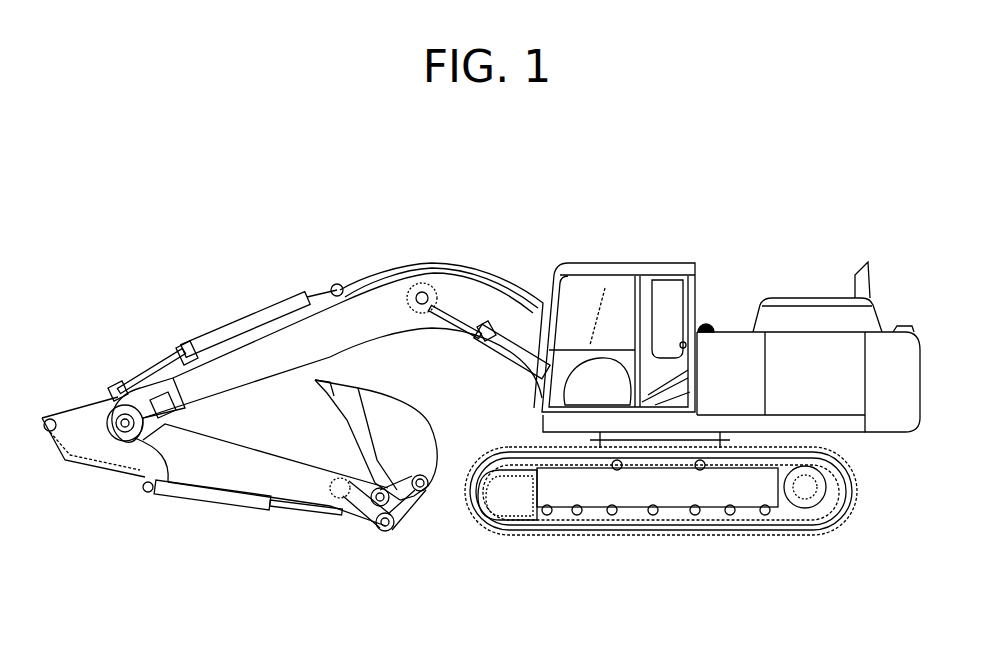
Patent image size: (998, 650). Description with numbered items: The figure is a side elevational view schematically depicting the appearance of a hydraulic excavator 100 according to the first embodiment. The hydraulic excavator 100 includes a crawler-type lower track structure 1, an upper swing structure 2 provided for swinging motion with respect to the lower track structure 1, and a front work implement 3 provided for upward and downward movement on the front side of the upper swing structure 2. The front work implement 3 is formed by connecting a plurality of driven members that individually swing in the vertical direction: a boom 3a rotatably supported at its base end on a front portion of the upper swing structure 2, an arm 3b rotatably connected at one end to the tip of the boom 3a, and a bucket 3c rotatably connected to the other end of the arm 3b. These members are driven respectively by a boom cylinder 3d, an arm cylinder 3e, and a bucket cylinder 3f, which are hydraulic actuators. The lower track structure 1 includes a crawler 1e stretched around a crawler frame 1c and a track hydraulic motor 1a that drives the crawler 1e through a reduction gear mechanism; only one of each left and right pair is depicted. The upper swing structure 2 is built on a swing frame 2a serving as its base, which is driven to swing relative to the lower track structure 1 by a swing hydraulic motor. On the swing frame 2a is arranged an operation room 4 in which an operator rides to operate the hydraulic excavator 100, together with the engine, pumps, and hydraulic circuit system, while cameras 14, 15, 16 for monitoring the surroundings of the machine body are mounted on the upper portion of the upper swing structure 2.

The hydraulic excavator 100 is at (145, 192).
The lower track structure 1 is at (672, 545).
The track hydraulic motor 1a is at (808, 495).
The crawler frame 1c is at (595, 492).
The crawler 1e is at (850, 490).
The upper swing structure 2 is at (810, 262).
The swing frame 2a is at (845, 430).
The front work implement 3 is at (378, 222).
The boom 3a is at (472, 292).
The arm 3b is at (90, 455).
The bucket 3c is at (428, 433).
The boom cylinder 3d is at (505, 358).
The arm cylinder 3e is at (253, 330).
The bucket cylinder 3f is at (214, 503).
The operation room 4 is at (610, 250).
The camera 14 is at (905, 326).
The camera 15 is at (741, 286).
The camera 16 is at (707, 318).